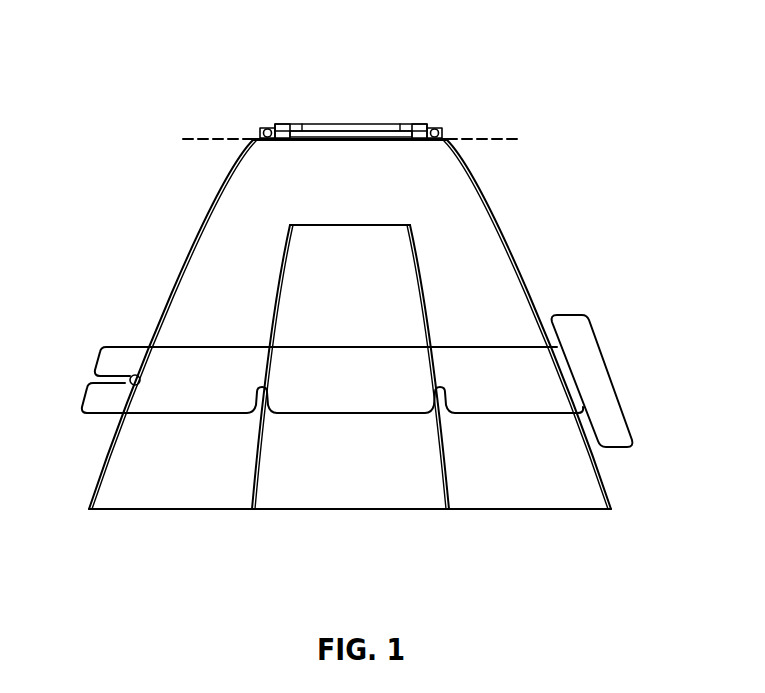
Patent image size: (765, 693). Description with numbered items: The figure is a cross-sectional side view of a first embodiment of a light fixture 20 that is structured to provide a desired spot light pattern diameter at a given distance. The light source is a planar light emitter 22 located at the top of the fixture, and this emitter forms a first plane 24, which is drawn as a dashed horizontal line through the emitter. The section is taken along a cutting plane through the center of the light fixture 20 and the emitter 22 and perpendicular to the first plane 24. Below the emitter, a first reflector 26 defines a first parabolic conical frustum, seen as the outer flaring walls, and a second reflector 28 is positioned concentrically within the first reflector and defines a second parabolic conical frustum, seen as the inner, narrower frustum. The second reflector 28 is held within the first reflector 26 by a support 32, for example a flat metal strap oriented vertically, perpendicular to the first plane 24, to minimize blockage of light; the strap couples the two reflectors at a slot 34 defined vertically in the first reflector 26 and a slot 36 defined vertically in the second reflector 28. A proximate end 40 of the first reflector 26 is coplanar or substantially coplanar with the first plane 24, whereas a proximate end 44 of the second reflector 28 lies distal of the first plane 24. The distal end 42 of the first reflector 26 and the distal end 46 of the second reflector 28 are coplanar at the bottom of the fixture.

The light fixture 20 is at (601, 67).
The planar light emitter 22 is at (337, 139).
The first plane 24 is at (480, 138).
The first reflector 26 is at (209, 197).
The second reflector 28 is at (300, 400).
The support 32 is at (105, 359).
The slot 34 is at (442, 377).
The slot 36 is at (582, 395).
The proximate end of the first reflector 40 is at (447, 141).
The distal end of the first reflector 42 is at (612, 510).
The proximate end of the second reflector 44 is at (412, 225).
The distal end of the second reflector 46 is at (450, 510).